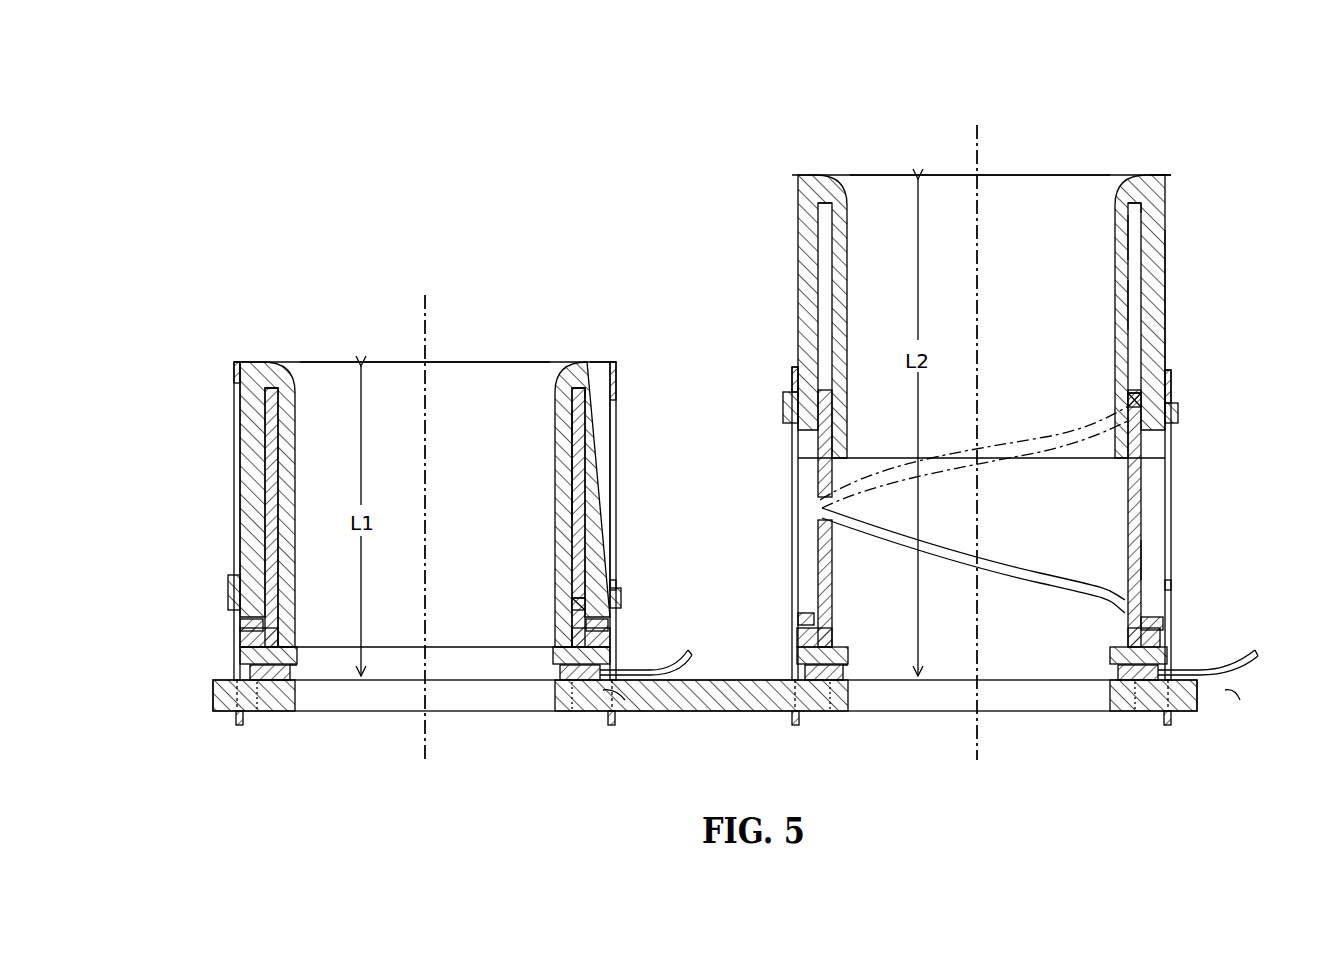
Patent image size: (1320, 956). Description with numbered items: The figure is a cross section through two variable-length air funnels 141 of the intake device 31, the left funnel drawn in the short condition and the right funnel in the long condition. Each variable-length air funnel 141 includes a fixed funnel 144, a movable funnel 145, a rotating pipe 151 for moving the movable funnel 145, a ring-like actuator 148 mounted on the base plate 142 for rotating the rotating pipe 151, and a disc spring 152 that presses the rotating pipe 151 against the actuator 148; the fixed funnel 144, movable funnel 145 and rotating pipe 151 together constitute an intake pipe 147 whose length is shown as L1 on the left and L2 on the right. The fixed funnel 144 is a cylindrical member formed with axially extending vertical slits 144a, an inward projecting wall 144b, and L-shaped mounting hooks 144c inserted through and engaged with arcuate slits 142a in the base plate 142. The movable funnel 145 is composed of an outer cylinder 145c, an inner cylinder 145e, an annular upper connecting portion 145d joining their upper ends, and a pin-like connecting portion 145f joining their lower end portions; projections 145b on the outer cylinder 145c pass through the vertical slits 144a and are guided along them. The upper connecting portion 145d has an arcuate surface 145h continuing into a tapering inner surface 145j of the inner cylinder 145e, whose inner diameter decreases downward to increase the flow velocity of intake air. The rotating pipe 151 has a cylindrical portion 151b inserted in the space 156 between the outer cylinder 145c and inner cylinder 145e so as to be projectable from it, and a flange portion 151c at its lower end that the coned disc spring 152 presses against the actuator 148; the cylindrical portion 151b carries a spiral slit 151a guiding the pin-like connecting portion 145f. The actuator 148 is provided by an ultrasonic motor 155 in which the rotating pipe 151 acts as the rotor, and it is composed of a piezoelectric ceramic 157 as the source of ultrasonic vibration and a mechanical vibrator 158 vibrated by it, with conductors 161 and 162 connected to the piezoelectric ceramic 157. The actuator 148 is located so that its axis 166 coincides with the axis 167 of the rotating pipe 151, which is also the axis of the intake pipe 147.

The fluid dispensing device 31 is at (365, 105).
The variable-length air funnel 141 is at (407, 342).
The base plate 142 is at (705, 712).
The arcuate slits 142a is at (257, 712).
The fixed funnel 144 is at (232, 462).
The vertical slits 144a is at (236, 398).
The inward projecting wall 144b is at (614, 583).
The L-shaped mounting hooks 144c is at (240, 726).
The movable funnel 145 is at (255, 358).
The projections 145b is at (227, 588).
The outer cylinder 145c is at (595, 470).
The annular upper connecting portion 145d is at (583, 390).
The inner cylinder 145e is at (568, 490).
The pin-like connecting portion 145f is at (578, 606).
The arcuate surface 145h is at (573, 390).
The tapering inner surface 145j is at (568, 440).
The intake pipe 147 is at (590, 352).
The actuator 148 is at (236, 653).
The rotating pipe 151 is at (562, 408).
The spiral slit 151a is at (578, 598).
The cylindrical portion 151b is at (285, 405).
The flange portion 151c is at (610, 625).
The disc spring 152 is at (238, 622).
The ultrasonic motor 155 is at (312, 560).
The space 156 is at (833, 175).
The piezoelectric ceramic 157 is at (288, 676).
The mechanical vibrator 158 is at (296, 668).
The conductor 161 is at (618, 698).
The conductor 162 is at (690, 652).
The axis of the actuator 166 is at (425, 295).
The axis of the rotating pipe 167 is at (701, 442).